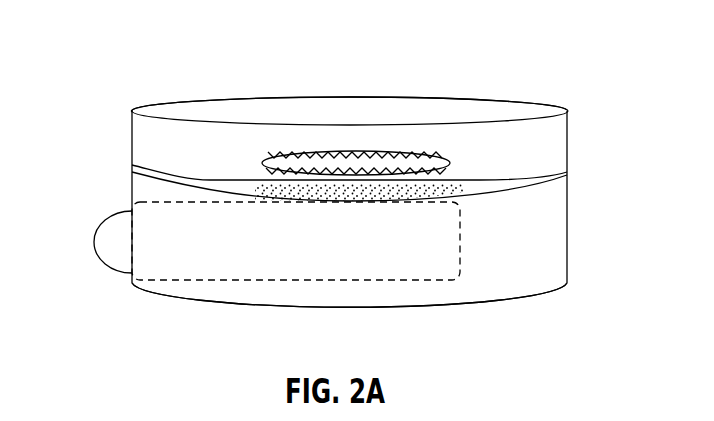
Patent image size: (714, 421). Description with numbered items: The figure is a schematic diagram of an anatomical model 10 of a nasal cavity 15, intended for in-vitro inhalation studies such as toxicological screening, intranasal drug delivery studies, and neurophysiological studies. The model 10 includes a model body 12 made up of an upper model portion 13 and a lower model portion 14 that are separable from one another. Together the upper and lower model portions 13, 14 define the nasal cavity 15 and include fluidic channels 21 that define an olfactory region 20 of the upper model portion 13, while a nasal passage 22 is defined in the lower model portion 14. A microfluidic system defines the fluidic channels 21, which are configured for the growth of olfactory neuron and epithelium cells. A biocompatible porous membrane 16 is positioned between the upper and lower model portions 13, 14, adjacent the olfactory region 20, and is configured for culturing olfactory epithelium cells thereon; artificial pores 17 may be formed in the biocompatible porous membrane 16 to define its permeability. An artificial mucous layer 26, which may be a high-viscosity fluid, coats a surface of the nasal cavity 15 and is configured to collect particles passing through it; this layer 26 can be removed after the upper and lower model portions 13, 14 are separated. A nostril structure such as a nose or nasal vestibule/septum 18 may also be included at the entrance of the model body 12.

The anatomical model 10 is at (118, 57).
The model body 12 is at (540, 162).
The upper model portion 13 is at (143, 133).
The lower model portion 14 is at (508, 287).
The nasal cavity 15 is at (592, 147).
The biocompatible porous membrane 16 is at (178, 178).
The artificial pores 17 is at (257, 184).
The nasal vestibule/septum 18 is at (101, 261).
The olfactory region 20 is at (353, 147).
The fluidic channels 21 is at (414, 157).
The nasal passage 22 is at (273, 262).
The artificial mucous layer 26 is at (361, 245).